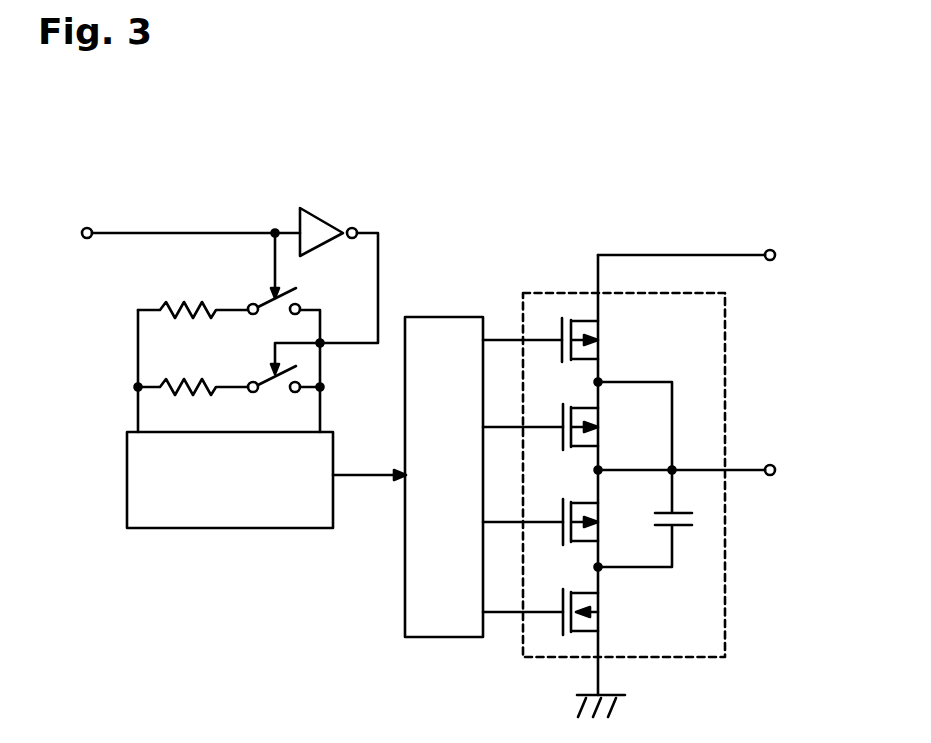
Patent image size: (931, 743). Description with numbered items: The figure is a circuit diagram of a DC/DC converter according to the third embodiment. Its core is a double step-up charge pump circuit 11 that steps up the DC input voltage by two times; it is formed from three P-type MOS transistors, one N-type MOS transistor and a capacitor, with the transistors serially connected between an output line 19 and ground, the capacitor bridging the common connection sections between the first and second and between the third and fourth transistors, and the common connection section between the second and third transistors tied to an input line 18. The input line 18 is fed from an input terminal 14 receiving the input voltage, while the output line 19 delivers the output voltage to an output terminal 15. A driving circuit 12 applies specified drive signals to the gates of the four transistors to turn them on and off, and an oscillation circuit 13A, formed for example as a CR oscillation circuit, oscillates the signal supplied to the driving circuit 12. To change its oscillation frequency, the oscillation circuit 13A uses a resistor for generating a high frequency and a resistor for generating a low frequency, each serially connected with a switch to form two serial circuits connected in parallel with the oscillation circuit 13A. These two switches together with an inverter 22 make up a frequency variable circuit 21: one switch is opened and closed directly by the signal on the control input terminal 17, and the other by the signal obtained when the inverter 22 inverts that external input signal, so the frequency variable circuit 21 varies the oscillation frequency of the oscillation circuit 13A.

The charge pump circuit 11 is at (552, 292).
The driving circuit 12 is at (432, 316).
The oscillation circuit 13A is at (284, 528).
The input terminal 14 is at (770, 464).
The output terminal 15 is at (770, 249).
The control input terminal 17 is at (88, 226).
The input line 18 is at (745, 478).
The output line 19 is at (684, 254).
The frequency variable circuit 21 is at (261, 213).
The inverter 22 is at (330, 221).